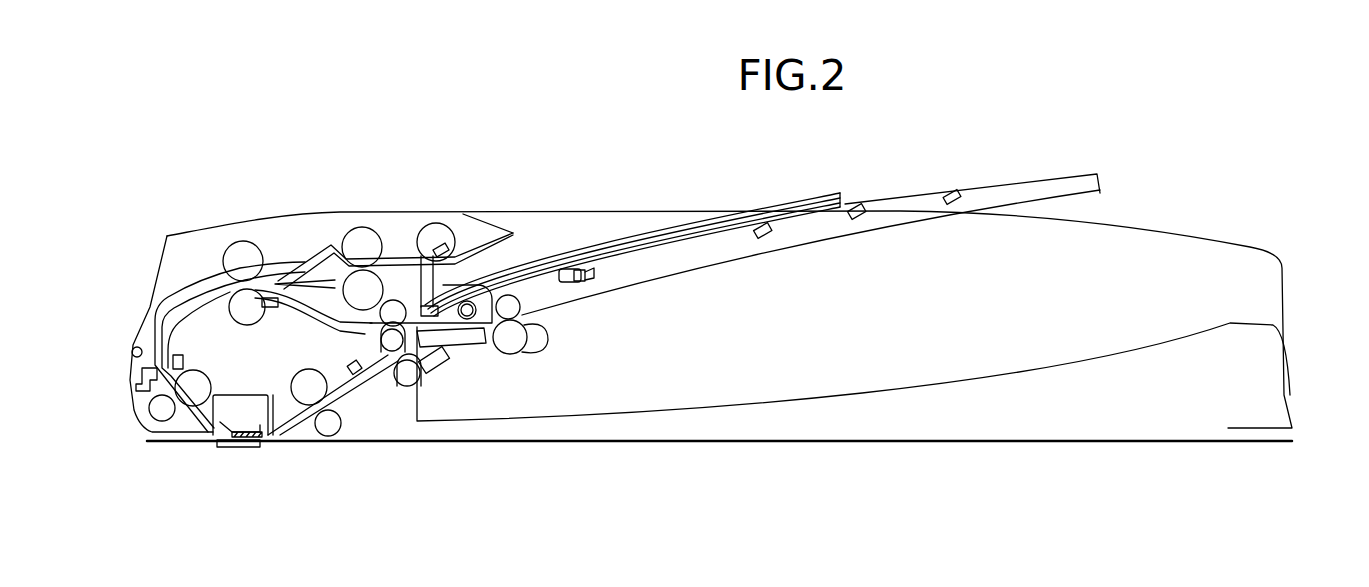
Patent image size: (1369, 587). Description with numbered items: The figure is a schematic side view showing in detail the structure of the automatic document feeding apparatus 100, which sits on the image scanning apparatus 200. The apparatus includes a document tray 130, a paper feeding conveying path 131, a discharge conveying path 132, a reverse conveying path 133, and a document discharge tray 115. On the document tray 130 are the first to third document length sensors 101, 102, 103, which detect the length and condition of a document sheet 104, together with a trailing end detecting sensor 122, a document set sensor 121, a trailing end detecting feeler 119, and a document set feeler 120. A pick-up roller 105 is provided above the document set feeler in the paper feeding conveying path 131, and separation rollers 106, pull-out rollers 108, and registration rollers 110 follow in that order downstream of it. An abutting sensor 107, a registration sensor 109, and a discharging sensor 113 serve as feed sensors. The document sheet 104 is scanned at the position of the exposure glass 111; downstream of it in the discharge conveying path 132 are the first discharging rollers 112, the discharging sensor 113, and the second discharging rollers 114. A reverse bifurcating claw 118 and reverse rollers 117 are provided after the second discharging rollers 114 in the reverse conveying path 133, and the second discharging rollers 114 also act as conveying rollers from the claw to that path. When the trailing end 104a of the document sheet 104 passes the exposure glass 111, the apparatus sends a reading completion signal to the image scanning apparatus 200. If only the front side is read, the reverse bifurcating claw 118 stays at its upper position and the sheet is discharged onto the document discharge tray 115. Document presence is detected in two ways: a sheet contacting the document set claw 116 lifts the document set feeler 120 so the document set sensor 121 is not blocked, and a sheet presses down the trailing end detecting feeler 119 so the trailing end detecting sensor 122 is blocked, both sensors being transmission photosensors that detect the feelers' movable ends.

The automatic document feeding apparatus 100 is at (1253, 247).
The first document length sensor 101 is at (963, 194).
The second document length sensor 102 is at (860, 203).
The third document length sensor 103 is at (768, 223).
The document sheet 104 is at (683, 227).
The trailing end 104a is at (840, 200).
The pick-up roller 105 is at (440, 245).
The separation rollers 106 is at (363, 292).
The abutting sensor 107 is at (267, 308).
The pull-out rollers 108 is at (246, 308).
The registration sensor 109 is at (183, 368).
The registration rollers 110 is at (163, 414).
The exposure glass 111 is at (245, 448).
The first discharging rollers 112 is at (320, 415).
The discharging sensor 113 is at (352, 364).
The second discharging rollers 114 is at (410, 378).
The document discharge tray 115 is at (912, 410).
The document set claw 116 is at (427, 290).
The reverse rollers 117 is at (532, 350).
The reverse bifurcating claw 118 is at (470, 338).
The trailing end detecting feeler 119 is at (577, 270).
The document set feeler 120 is at (428, 306).
The document set sensor 121 is at (466, 322).
The trailing end detecting sensor 122 is at (594, 268).
The document tray 130 is at (1042, 194).
The paper feeding conveying path 131 is at (180, 305).
The discharge conveying path 132 is at (355, 397).
The reverse conveying path 133 is at (307, 300).
The image scanning apparatus 200 is at (1283, 488).